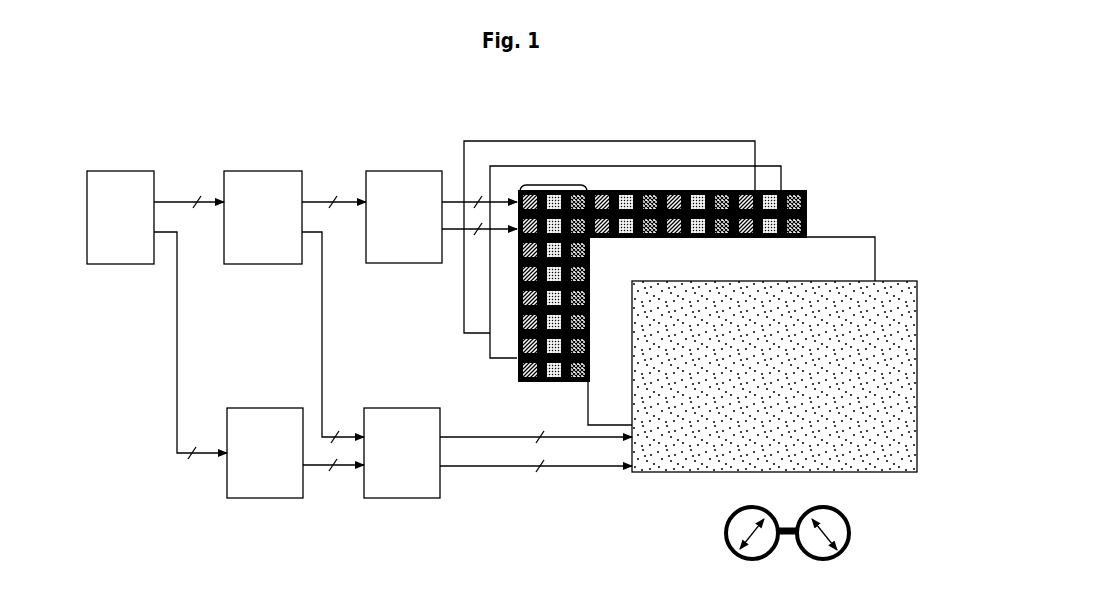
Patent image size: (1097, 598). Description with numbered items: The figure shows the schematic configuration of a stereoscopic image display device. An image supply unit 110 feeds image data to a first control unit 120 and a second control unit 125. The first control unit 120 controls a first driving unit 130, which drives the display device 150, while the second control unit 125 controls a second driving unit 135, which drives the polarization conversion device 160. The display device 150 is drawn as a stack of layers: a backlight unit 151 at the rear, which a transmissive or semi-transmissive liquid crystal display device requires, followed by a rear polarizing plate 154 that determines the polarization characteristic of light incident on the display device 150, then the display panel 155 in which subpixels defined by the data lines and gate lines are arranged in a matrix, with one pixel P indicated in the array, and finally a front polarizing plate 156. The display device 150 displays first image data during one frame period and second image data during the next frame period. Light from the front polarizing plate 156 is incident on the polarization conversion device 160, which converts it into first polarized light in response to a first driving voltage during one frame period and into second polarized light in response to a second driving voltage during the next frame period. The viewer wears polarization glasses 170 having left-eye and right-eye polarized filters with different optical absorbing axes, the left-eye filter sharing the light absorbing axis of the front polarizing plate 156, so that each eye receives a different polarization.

The image supply unit 110 is at (121, 171).
The first control unit 120 is at (262, 171).
The first driving unit 130 is at (403, 171).
The second control unit 125 is at (264, 408).
The second driving unit 135 is at (401, 408).
The display device 150 is at (679, 255).
The backlight unit 151 is at (755, 141).
The rear polarizing plate 154 is at (781, 166).
The display panel 155 is at (807, 190).
The front polarizing plate 156 is at (847, 237).
The polarization conversion device 160 is at (890, 281).
The polarization glasses 170 is at (849, 522).
The pixel P is at (553, 186).